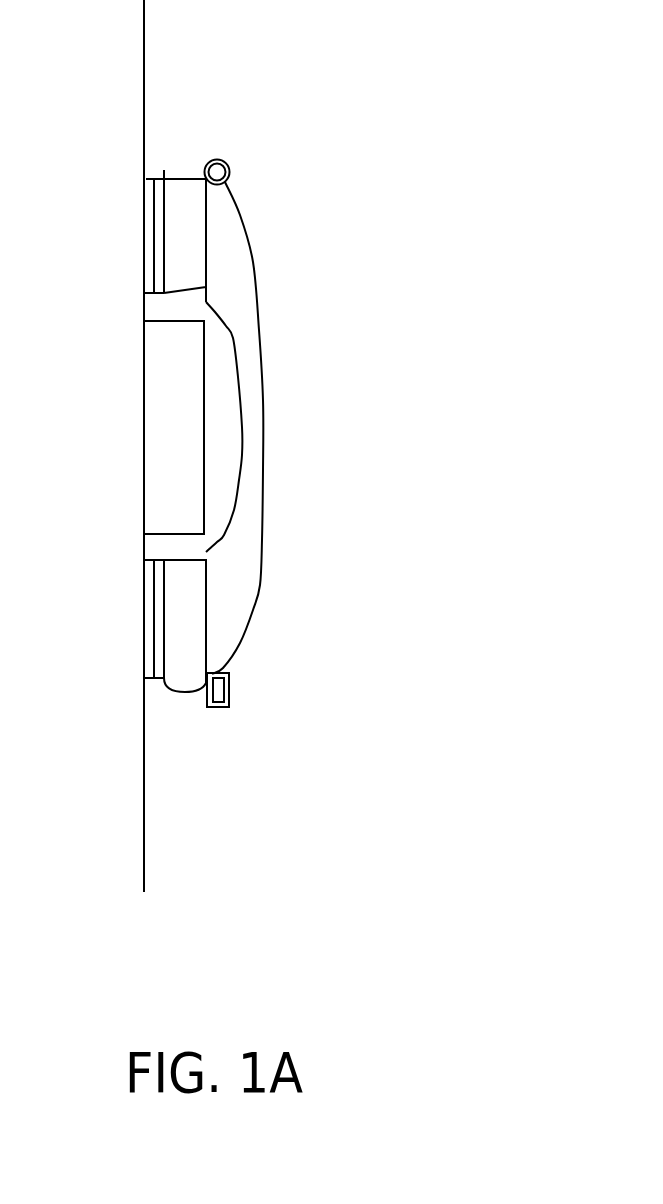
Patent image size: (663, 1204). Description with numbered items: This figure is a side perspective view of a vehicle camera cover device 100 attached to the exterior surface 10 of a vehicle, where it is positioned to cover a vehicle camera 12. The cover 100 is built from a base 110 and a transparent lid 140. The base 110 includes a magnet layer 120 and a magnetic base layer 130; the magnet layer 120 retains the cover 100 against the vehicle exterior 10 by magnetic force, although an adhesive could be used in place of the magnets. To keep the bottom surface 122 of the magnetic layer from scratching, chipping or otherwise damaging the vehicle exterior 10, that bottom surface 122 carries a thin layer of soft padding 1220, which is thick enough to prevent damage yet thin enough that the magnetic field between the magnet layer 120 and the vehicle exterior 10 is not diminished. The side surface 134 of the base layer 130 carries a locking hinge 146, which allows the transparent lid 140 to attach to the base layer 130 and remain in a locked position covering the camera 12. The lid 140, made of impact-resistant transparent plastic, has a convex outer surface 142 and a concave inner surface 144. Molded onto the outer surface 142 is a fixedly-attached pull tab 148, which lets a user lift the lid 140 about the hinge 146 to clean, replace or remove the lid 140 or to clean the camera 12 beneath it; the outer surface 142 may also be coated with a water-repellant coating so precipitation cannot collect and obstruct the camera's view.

The exterior surface of a vehicle 10 is at (143, 410).
The camera 12 is at (168, 462).
The vehicle camera cover device 100 is at (385, 272).
The base 110 is at (192, 112).
The magnet layer 120 is at (157, 276).
The bottom surface 122 is at (153, 190).
The padding 1220 is at (150, 235).
The magnetic base layer 130 is at (177, 197).
The side surface 134 is at (180, 692).
The transparent lid 140 is at (278, 487).
The convex outer surface 142 is at (262, 378).
The concave inner surface 144 is at (232, 338).
The locking hinge 146 is at (220, 158).
The pull tab 148 is at (229, 697).